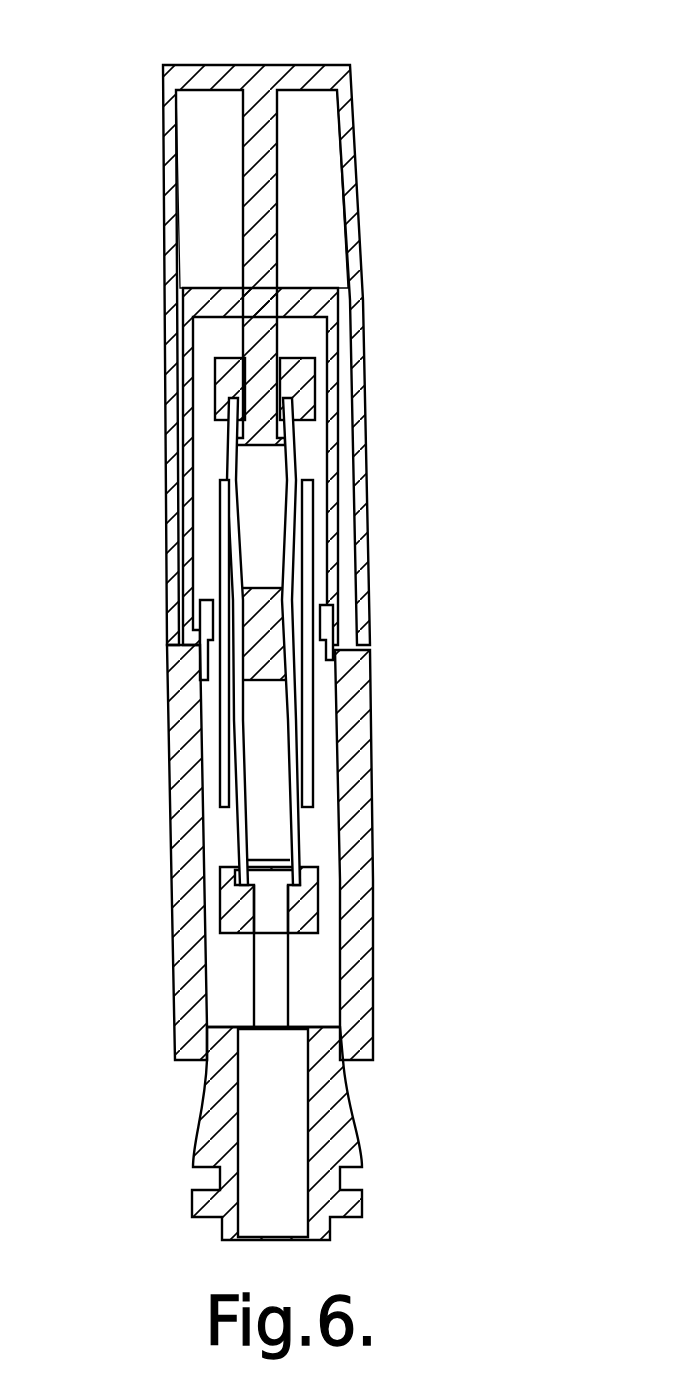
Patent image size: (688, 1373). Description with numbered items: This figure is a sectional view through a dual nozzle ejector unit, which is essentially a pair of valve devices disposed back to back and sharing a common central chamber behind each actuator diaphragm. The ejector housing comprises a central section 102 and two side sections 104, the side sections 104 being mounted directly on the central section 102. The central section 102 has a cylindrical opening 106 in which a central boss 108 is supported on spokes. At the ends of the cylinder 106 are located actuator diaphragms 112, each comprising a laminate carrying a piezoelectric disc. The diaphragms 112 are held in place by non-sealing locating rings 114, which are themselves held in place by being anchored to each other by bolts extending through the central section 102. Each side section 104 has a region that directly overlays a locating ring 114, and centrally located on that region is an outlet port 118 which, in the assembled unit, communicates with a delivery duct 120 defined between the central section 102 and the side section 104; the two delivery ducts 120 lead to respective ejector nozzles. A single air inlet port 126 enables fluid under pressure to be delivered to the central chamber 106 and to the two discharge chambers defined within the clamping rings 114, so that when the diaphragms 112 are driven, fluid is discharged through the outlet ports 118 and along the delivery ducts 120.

The central section 102 is at (260, 97).
The side sections 104 is at (187, 983).
The cylindrical opening 106 is at (262, 778).
The central boss 108 is at (262, 660).
The actuator diaphragms 112 is at (219, 472).
The locating rings 114 is at (237, 370).
The outlet port 118 is at (326, 604).
The delivery duct 120 is at (187, 226).
The air inlet port 126 is at (333, 1120).